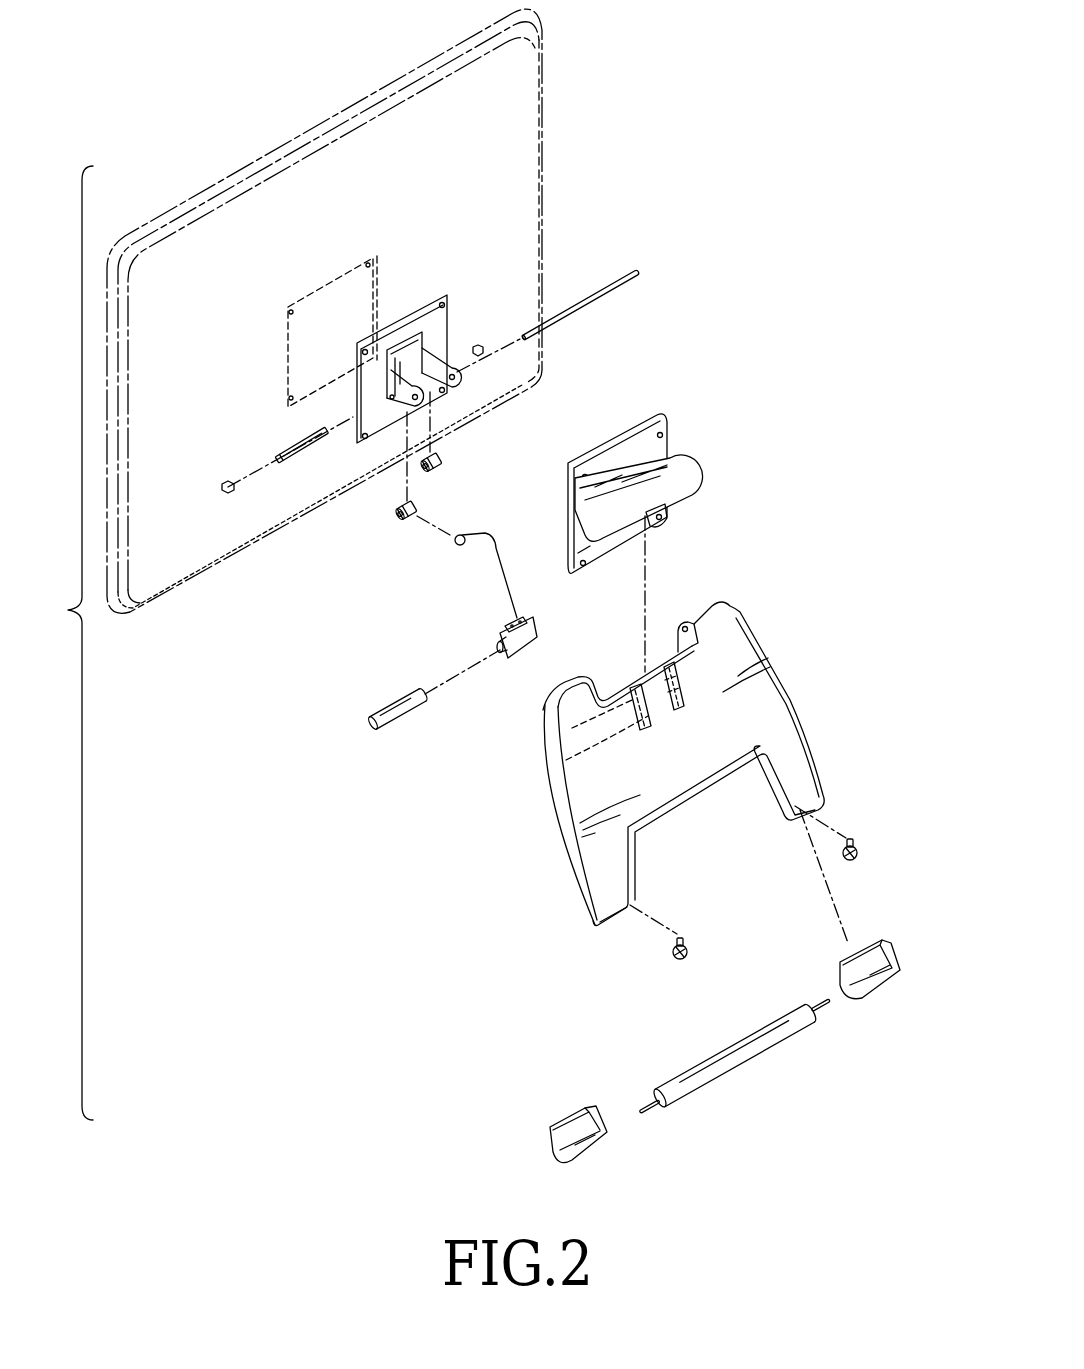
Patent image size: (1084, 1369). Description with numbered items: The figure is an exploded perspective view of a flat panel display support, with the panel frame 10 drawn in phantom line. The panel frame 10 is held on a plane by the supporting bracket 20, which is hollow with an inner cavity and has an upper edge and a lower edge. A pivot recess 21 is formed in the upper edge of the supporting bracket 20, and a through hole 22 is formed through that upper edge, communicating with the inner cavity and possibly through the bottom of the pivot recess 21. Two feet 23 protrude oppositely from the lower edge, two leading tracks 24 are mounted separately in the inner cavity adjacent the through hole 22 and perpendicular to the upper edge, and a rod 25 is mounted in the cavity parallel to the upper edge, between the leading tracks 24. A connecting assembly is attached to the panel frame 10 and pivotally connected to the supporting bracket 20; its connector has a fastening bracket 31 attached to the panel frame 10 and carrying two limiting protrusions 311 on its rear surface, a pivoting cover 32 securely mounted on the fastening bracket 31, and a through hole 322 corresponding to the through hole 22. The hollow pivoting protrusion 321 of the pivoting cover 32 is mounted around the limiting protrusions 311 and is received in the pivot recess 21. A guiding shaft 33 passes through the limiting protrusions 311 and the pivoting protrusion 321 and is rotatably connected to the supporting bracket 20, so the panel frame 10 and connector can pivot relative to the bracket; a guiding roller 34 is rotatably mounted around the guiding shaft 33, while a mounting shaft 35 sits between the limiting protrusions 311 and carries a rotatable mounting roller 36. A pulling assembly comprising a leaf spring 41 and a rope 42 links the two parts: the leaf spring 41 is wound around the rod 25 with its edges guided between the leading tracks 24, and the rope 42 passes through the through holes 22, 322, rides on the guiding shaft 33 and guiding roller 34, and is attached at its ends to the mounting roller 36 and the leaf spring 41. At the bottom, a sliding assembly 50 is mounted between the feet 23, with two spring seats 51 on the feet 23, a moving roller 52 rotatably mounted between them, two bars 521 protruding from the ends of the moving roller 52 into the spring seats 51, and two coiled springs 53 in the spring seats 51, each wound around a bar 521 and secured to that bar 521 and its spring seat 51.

The panel frame 10 is at (521, 103).
The supporting bracket 20 is at (753, 667).
The pivot recess 21 is at (686, 622).
The through hole 22 is at (649, 660).
The feet 23 is at (810, 790).
The leading tracks 24 is at (567, 760).
The rod 25 is at (397, 703).
The fastening bracket 31 is at (407, 315).
The limiting protrusions 311 is at (430, 362).
The pivoting cover 32 is at (665, 442).
The pivoting protrusion 321 is at (688, 486).
The through hole 322 is at (657, 527).
The guiding shaft 33 is at (590, 300).
The guiding roller 34 is at (442, 466).
The mounting shaft 35 is at (290, 448).
The mounting roller 36 is at (420, 510).
The leaf spring 41 is at (537, 618).
The rope 42 is at (495, 560).
The sliding assembly 50 is at (743, 1062).
The spring seats 51 is at (873, 985).
The moving roller 52 is at (750, 1040).
The bars 521 is at (647, 1103).
The coiled springs 53 is at (688, 942).